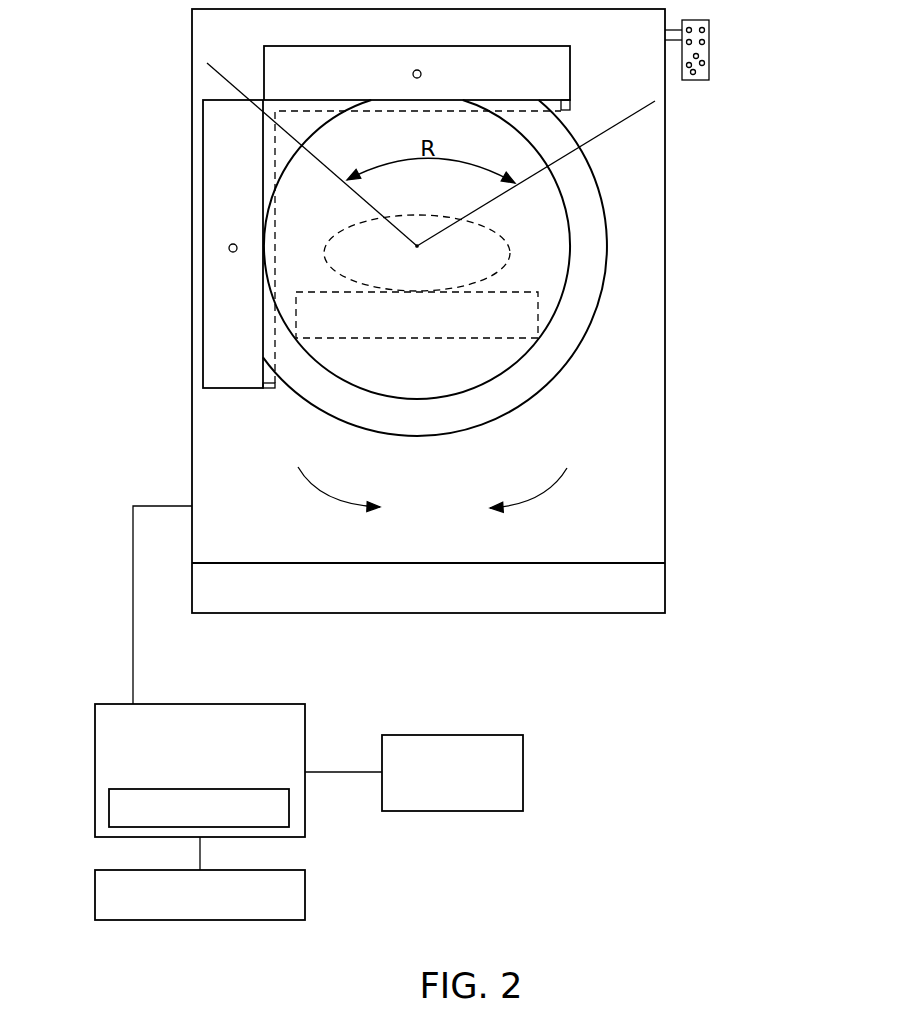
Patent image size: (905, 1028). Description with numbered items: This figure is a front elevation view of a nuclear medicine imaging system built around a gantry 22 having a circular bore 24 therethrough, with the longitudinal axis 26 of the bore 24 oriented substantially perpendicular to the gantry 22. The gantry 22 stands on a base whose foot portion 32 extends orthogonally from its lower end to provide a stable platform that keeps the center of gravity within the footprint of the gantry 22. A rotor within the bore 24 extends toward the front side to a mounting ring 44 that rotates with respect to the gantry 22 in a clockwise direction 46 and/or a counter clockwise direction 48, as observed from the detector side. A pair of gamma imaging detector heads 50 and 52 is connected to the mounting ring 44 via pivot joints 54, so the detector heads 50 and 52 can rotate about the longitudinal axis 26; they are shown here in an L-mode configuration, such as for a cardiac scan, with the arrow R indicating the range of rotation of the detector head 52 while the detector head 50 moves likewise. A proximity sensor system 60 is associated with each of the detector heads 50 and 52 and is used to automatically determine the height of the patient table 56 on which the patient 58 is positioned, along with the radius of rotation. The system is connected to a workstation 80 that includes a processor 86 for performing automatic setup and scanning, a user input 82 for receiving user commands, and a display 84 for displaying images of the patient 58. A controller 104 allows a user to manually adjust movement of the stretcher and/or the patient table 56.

The gantry 22 is at (659, 517).
The bore 24 is at (417, 249).
The longitudinal axis 26 is at (417, 246).
The foot portion 32 is at (626, 605).
The mounting ring 44 is at (592, 223).
The clockwise direction 46 is at (540, 487).
The counter clockwise direction 48 is at (323, 487).
The gamma imaging detector head 50 is at (233, 389).
The gamma imaging detector head 52 is at (566, 70).
The pivot joints 54 is at (412, 74).
The patient table 56 is at (450, 320).
The patient 58 is at (492, 262).
The proximity sensor system 60 is at (279, 242).
The workstation 80 is at (95, 749).
The user input 82 is at (95, 897).
The display 84 is at (526, 772).
The processor 86 is at (109, 812).
The controller 104 is at (710, 52).